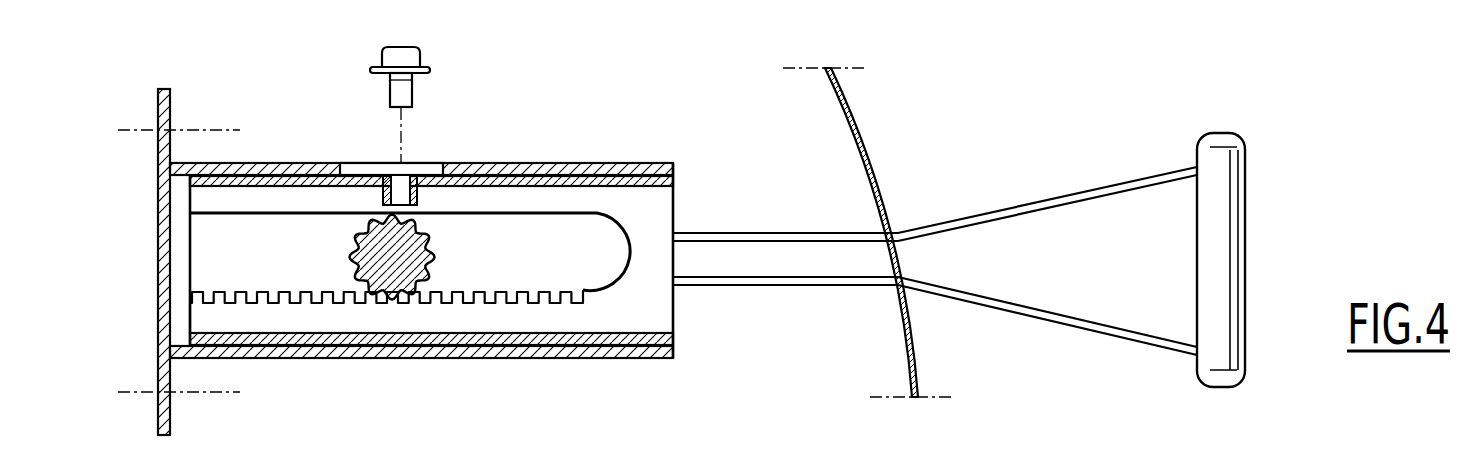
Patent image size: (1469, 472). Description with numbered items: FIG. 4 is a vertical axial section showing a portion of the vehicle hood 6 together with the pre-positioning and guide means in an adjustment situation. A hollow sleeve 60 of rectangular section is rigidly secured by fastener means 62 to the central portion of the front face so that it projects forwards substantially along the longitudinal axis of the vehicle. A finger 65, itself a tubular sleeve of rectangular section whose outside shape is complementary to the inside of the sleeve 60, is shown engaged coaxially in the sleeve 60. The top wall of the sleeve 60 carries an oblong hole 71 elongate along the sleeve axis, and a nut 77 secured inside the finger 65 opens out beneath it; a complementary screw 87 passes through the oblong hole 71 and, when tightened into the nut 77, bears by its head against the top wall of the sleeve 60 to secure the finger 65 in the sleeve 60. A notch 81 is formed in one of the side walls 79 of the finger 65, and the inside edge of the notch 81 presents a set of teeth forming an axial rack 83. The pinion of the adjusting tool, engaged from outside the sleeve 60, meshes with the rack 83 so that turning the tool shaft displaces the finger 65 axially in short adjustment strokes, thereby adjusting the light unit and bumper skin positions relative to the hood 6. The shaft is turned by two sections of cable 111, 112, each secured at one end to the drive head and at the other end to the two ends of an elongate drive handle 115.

The fastener means 62 is at (207, 128).
The hollow sleeve 60 is at (569, 163).
The oblong hole 71 is at (363, 168).
The nut 77 is at (418, 170).
The screw 87 is at (415, 58).
The finger 65 is at (657, 207).
The side wall 79 is at (657, 315).
The notch 81 is at (222, 259).
The axial rack 83 is at (303, 298).
The hood 6 is at (862, 150).
The section of cable 111 is at (1062, 193).
The section of cable 112 is at (1078, 320).
The drive handle 115 is at (1228, 258).